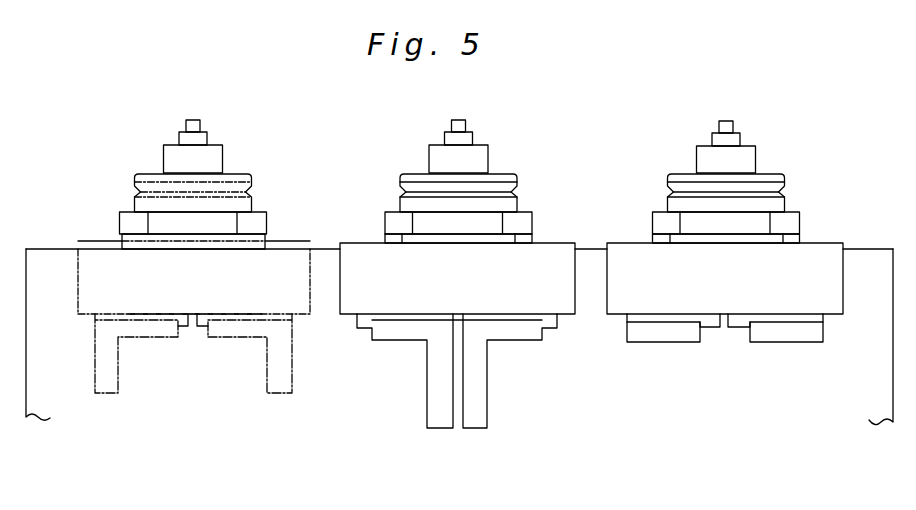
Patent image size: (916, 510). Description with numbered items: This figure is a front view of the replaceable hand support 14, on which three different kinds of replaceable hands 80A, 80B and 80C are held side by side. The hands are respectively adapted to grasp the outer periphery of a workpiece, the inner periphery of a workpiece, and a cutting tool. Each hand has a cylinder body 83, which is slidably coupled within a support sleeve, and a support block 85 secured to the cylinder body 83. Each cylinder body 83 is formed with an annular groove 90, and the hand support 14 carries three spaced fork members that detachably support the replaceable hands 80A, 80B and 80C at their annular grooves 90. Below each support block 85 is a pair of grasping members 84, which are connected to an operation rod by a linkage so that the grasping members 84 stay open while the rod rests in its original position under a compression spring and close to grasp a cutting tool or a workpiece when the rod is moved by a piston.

The hand support 14 is at (870, 248).
The replaceable hand 80A is at (155, 162).
The replaceable hand 80B is at (416, 163).
The replaceable hand 80C is at (684, 164).
The cylinder body 83 is at (499, 176).
The grasping members 84 is at (267, 346).
The support block 85 is at (566, 306).
The annular grooves 90 is at (518, 195).